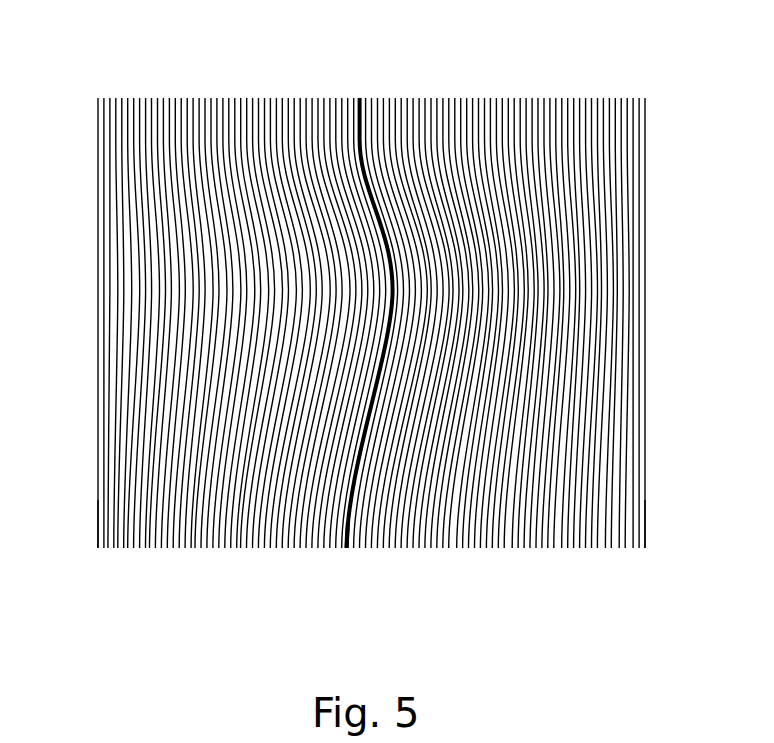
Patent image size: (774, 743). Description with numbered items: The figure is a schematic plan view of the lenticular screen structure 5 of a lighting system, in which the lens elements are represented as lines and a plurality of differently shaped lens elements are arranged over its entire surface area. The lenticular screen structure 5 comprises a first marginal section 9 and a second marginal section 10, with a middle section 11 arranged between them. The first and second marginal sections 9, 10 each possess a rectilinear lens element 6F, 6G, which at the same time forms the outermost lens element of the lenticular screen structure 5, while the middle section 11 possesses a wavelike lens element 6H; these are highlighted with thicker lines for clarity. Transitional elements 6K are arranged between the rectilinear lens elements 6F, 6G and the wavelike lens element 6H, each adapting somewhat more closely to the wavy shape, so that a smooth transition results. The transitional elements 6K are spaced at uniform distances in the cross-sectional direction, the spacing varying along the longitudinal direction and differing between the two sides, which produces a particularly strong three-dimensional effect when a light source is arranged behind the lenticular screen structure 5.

The lenticular screen structure 5 is at (690, 271).
The rectilinear lens element 6F is at (97, 110).
The rectilinear lens element 6G is at (647, 118).
The wavelike lens element 6H is at (358, 100).
The transitional elements 6K is at (195, 112).
The first marginal section 9 is at (102, 570).
The second marginal section 10 is at (643, 571).
The middle section 11 is at (358, 574).